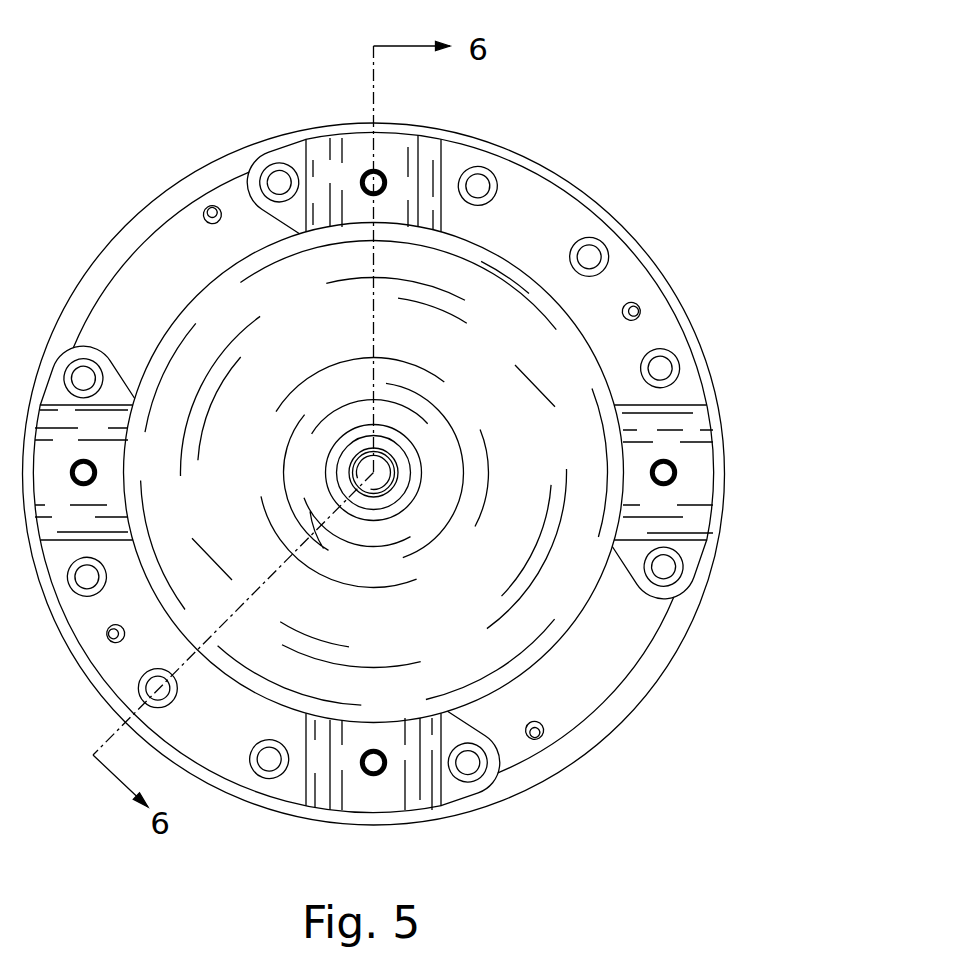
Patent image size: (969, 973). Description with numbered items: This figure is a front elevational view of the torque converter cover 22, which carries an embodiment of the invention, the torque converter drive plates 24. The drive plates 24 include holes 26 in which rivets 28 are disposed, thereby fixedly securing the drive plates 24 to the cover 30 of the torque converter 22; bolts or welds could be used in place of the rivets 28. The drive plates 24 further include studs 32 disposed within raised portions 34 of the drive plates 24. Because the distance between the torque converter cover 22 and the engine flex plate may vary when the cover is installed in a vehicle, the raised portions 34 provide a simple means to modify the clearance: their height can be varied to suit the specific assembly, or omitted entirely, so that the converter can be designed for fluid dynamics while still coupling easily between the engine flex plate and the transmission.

The torque converter cover 22 is at (374, 442).
The torque converter drive plates 24 is at (428, 427).
The holes 26 is at (709, 310).
The rivets 28 is at (740, 384).
The cover 30 is at (254, 226).
The studs 32 is at (730, 524).
The raised portions 34 is at (720, 502).